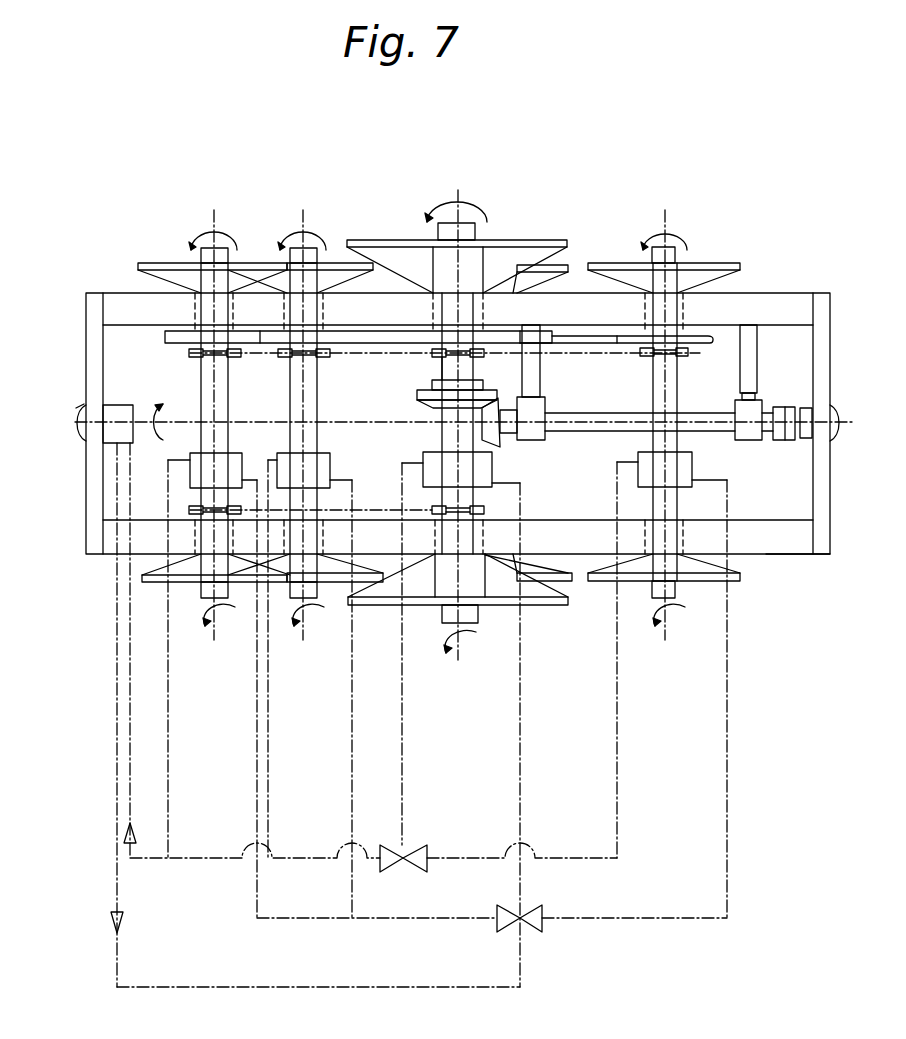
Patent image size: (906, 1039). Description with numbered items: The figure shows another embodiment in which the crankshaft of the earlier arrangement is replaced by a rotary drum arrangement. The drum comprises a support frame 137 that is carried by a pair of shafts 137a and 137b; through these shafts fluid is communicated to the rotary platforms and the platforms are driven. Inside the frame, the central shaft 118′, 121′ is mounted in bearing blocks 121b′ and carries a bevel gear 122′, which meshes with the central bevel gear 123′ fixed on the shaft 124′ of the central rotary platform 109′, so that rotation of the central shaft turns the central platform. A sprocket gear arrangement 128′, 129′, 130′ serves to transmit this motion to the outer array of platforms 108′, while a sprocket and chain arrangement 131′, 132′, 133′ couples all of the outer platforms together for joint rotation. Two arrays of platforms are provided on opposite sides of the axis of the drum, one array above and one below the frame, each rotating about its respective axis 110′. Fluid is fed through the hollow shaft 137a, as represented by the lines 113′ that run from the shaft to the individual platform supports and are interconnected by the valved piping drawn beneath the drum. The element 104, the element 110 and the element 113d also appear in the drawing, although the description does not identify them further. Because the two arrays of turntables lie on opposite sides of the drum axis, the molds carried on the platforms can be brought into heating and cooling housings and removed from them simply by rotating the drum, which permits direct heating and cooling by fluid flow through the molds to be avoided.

The frame 104 is at (192, 419).
The outer platform 108′ is at (708, 264).
The central rotary platform 109′ is at (523, 244).
The axis of rotation 110′ is at (459, 257).
The spool shaft 110 is at (669, 384).
The fluid feed 113′ is at (128, 706).
The bearing block 113d is at (192, 455).
The central shaft 118′ is at (812, 408).
The central shaft 121′ is at (699, 419).
The bearing block 121b′ is at (547, 440).
The bevel gear 122′ is at (494, 439).
The central bevel gear 123′ is at (431, 403).
The platform shaft 124′ is at (446, 364).
The sprocket gear arrangement 128′ is at (486, 510).
The sprocket gear arrangement 129′ is at (360, 510).
The sprocket gear arrangement 130′ is at (190, 509).
The sprocket and chain arrangement 131′ is at (231, 360).
The sprocket and chain arrangement 132′ is at (322, 360).
The sprocket and chain arrangement 133′ is at (596, 356).
The support frame 137 is at (770, 570).
The hollow shaft 137a is at (79, 439).
The shaft 137b is at (836, 443).